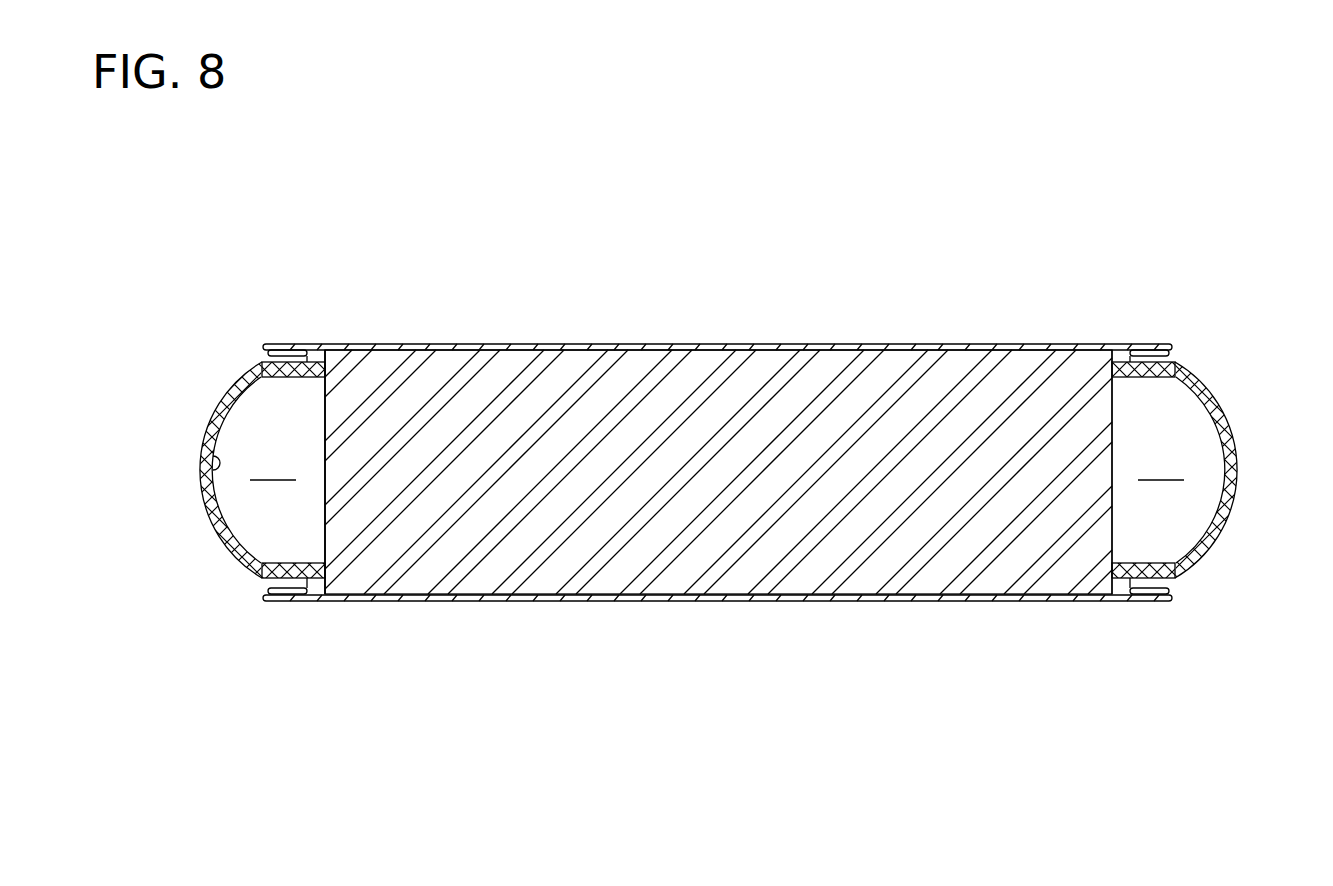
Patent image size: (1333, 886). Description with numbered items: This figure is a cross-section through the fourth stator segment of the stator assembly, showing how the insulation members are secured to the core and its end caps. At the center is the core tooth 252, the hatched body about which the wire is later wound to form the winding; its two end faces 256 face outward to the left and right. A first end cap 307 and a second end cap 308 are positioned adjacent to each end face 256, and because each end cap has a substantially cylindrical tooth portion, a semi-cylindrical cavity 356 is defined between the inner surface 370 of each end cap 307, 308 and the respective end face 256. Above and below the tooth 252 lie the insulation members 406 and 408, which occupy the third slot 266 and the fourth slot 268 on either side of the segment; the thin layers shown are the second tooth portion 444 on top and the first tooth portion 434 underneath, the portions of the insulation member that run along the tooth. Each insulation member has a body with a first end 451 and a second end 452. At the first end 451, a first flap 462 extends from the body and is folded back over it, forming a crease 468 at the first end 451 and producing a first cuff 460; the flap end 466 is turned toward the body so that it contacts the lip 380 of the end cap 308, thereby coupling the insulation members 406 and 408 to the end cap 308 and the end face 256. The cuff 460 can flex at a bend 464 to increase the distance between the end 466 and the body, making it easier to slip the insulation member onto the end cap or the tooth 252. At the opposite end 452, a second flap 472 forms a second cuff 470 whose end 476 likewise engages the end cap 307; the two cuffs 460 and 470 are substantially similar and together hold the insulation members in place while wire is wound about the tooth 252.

The tooth 252 is at (828, 368).
The end face 256 is at (322, 418).
The third slot 266 is at (766, 316).
The fourth slot 268 is at (758, 648).
The first end cap 307 is at (1232, 420).
The second end cap 308 is at (200, 507).
The cavity 356 is at (717, 464).
The inner surface 370 is at (210, 458).
The lip 380 is at (324, 350).
The insulation member 406 is at (633, 342).
The insulation member 408 is at (585, 608).
The first tooth portion 434 is at (507, 603).
The second tooth portion 444 is at (520, 344).
The first end 451 is at (208, 311).
The second end 452 is at (1233, 353).
The first cuff 460 is at (270, 609).
The first flap 462 is at (266, 362).
The bend 464 is at (263, 601).
The end of flap 466 is at (300, 350).
The crease 468 is at (268, 345).
The second cuff 470 is at (1152, 609).
The second flap 472 is at (1172, 585).
The end of flap 476 is at (1125, 603).